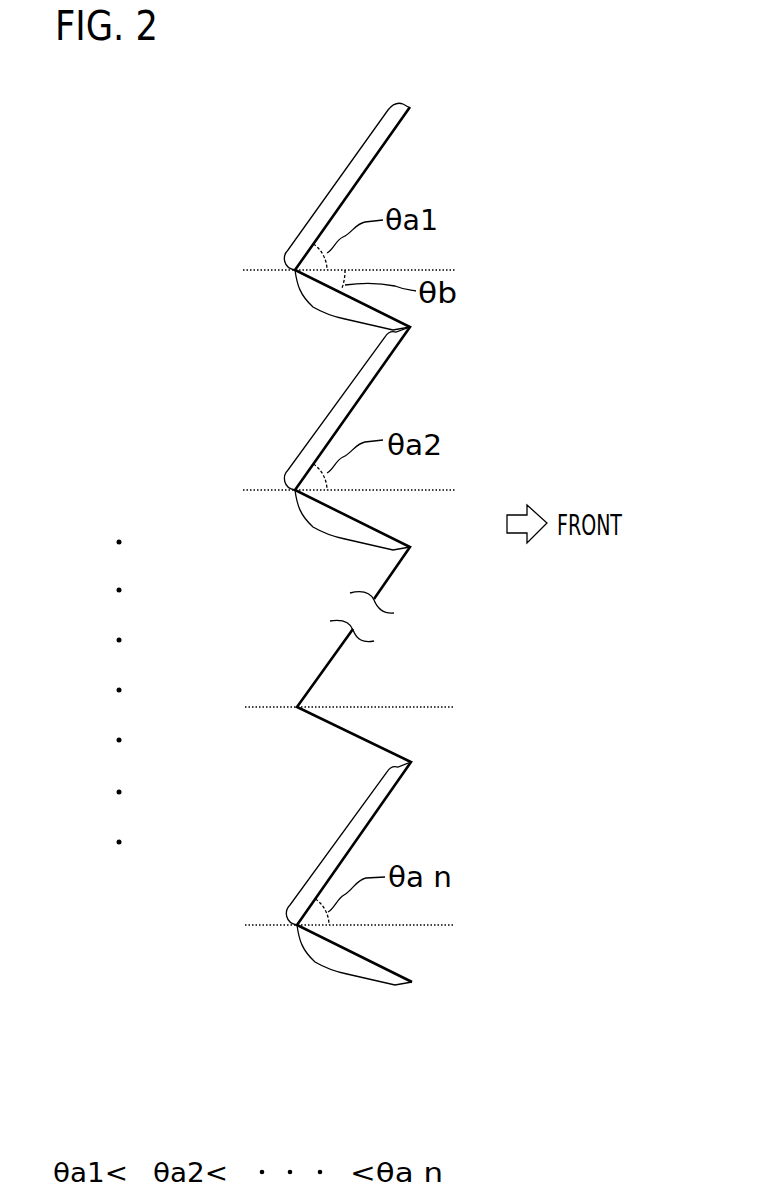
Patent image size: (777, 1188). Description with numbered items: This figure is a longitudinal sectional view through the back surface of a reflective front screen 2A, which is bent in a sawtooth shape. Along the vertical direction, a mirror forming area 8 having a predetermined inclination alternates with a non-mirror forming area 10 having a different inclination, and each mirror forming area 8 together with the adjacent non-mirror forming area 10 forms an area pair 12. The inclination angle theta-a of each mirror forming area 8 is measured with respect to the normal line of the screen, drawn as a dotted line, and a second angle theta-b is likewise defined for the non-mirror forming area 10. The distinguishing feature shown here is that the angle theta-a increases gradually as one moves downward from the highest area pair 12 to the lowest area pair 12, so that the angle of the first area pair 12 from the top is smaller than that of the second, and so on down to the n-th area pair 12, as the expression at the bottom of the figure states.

The reflective front screen 2A is at (340, 1010).
The mirror forming area 8 is at (330, 182).
The non-mirror forming area 10 is at (338, 320).
The area pair 12 is at (180, 997).